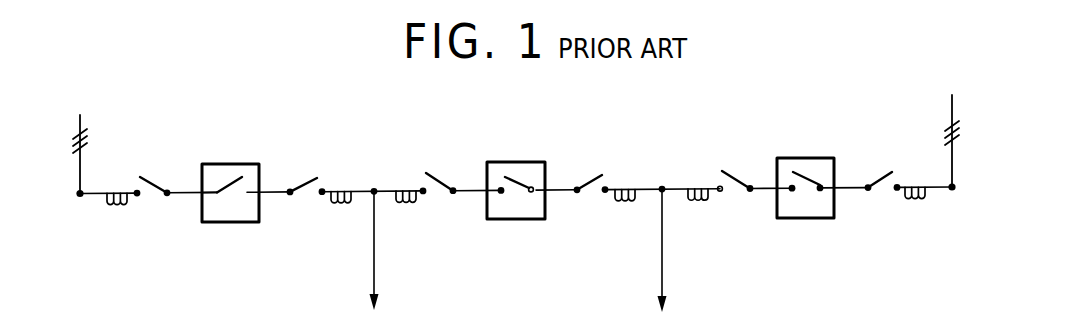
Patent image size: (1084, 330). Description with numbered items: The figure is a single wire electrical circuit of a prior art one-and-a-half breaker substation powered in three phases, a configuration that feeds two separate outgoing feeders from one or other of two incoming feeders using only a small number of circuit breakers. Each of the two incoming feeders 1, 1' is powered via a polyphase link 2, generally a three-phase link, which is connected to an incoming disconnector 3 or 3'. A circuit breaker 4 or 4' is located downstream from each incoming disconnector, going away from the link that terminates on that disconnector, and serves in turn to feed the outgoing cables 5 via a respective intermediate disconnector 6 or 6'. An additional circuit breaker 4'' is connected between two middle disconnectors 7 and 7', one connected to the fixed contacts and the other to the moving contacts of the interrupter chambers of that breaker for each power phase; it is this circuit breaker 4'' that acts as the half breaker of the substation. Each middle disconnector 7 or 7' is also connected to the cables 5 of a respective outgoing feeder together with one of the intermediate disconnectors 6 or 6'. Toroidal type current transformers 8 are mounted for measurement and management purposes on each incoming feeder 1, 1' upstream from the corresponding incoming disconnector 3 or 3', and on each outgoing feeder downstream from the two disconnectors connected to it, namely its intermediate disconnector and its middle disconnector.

The incoming feeder 1 is at (99, 223).
The incoming feeder 1' is at (938, 170).
The polyphase link 2 is at (86, 124).
The incoming disconnector 3 is at (145, 164).
The incoming disconnector 3' is at (869, 158).
The circuit breaker 4 is at (230, 169).
The circuit breaker 4' is at (808, 164).
The additional circuit breaker 4'' is at (516, 164).
The cables 5 is at (375, 273).
The intermediate disconnector 6 is at (298, 163).
The intermediate disconnector 6' is at (745, 160).
The middle disconnector 7 is at (445, 162).
The middle disconnector 7' is at (585, 160).
The current transformer 8 is at (120, 204).